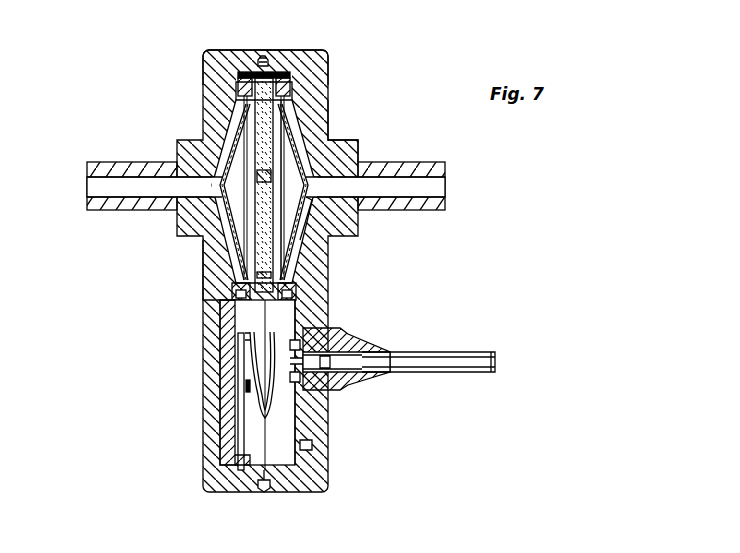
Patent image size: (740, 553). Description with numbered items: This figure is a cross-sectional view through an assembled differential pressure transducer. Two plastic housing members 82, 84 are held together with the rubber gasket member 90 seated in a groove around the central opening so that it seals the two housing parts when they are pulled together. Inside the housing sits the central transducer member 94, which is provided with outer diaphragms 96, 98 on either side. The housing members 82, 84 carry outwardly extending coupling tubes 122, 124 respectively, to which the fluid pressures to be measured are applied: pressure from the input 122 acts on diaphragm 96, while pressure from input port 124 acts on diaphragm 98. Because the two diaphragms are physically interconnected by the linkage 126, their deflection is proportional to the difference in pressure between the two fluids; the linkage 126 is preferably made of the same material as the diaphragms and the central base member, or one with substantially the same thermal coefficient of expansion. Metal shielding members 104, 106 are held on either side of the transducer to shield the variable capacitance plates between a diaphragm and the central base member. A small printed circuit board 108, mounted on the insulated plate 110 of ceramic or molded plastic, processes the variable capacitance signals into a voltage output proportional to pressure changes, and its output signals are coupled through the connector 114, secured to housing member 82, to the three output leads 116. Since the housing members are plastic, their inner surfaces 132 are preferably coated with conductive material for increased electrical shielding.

The housing member 82 is at (327, 117).
The housing member 84 is at (207, 82).
The rubber gasket member 90 is at (262, 52).
The central transducer member 94 is at (270, 66).
The outer diaphragm 96 is at (323, 147).
The outer diaphragm 98 is at (247, 147).
The metal shielding member 104 is at (212, 264).
The metal shielding member 106 is at (300, 160).
The printed circuit board 108 is at (248, 497).
The insulated plate 110 is at (212, 415).
The connector 114 is at (360, 382).
The output leads 116 is at (441, 372).
The coupling tube 122 is at (400, 163).
The coupling tube 124 is at (145, 152).
The linkage 126 is at (320, 202).
The inner surfaces 132 is at (332, 470).